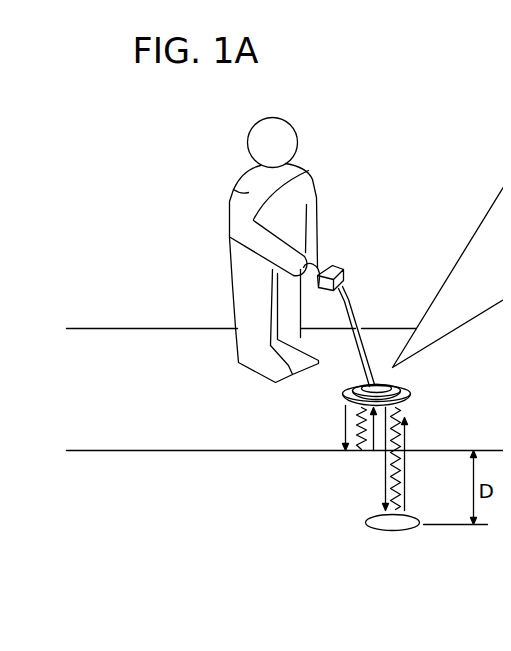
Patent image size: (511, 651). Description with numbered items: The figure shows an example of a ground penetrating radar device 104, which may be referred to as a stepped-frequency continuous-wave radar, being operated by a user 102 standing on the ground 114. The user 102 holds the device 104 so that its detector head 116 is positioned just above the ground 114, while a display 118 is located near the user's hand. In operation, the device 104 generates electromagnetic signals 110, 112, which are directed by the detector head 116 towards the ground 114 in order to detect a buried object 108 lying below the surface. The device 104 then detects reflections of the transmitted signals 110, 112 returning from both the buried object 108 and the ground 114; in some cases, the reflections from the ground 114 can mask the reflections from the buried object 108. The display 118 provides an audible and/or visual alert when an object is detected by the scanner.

The user 102 is at (272, 119).
The GPR device 104 is at (381, 331).
The buried object 108 is at (397, 533).
The electromagnetic signal 110 is at (345, 410).
The electromagnetic signal 112 is at (405, 431).
The ground 114 is at (167, 445).
The detector head 116 is at (410, 391).
The display 118 is at (331, 268).